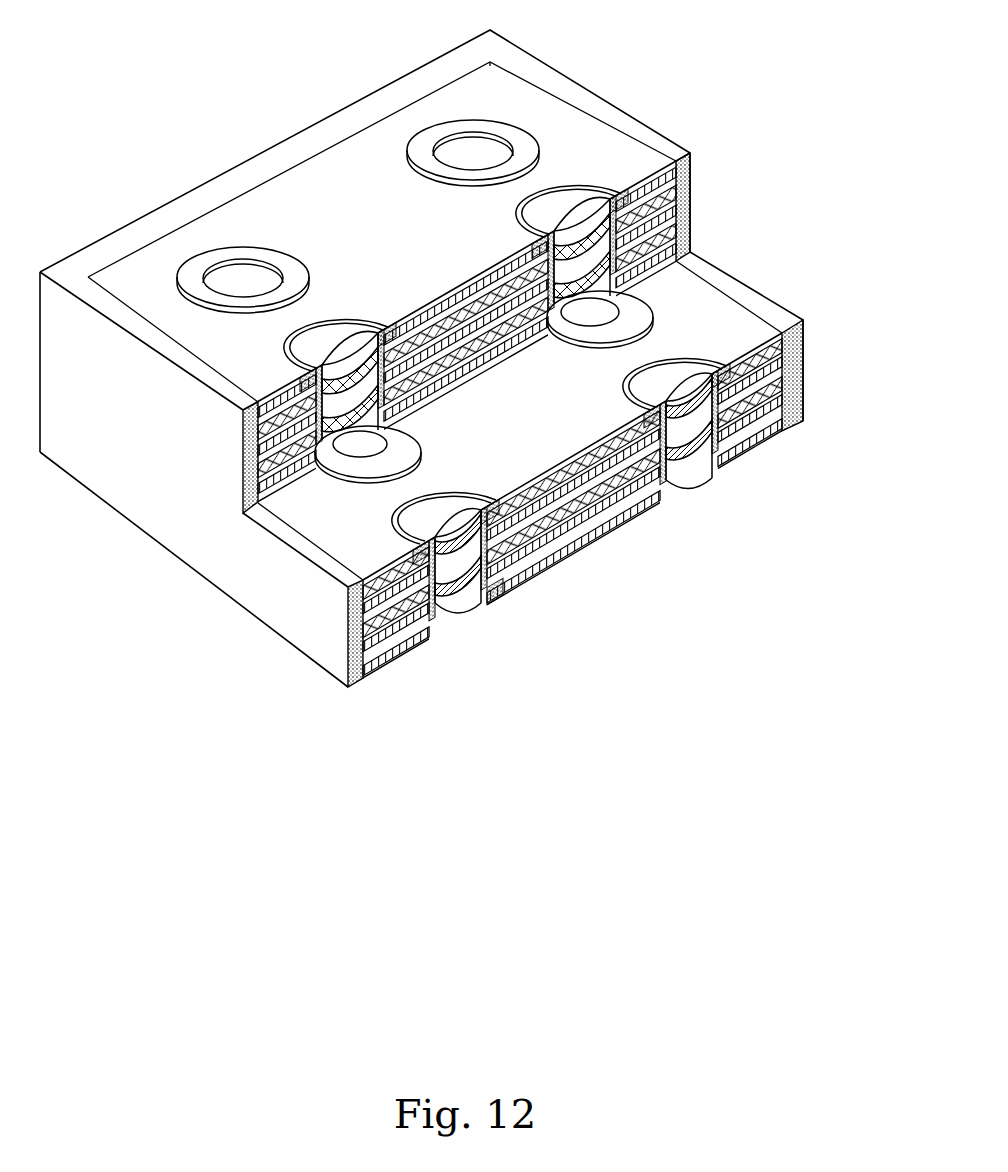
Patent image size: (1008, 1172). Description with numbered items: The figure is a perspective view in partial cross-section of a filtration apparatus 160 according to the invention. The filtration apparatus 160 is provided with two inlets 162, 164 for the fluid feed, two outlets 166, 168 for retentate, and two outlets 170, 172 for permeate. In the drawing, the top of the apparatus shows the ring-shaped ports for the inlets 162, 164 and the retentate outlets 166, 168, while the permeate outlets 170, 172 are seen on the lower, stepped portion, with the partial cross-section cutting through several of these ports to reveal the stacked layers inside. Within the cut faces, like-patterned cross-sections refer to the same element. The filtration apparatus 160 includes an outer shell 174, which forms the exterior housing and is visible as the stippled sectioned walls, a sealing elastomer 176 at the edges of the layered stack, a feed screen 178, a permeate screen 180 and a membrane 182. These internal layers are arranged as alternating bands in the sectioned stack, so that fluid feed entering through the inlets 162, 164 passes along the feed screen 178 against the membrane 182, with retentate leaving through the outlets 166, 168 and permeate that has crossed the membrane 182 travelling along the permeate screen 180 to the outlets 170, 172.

The filtration apparatus 160 is at (692, 117).
The inlet 162 is at (568, 190).
The inlet 164 is at (495, 132).
The outlet 166 is at (344, 325).
The outlet 168 is at (293, 268).
The outlet 170 is at (455, 597).
The outlet 172 is at (690, 464).
The outer shell 174 is at (355, 688).
The sealing elastomer 176 is at (365, 575).
The feed screen 178 is at (776, 340).
The permeate screen 180 is at (781, 370).
The membrane 182 is at (760, 420).